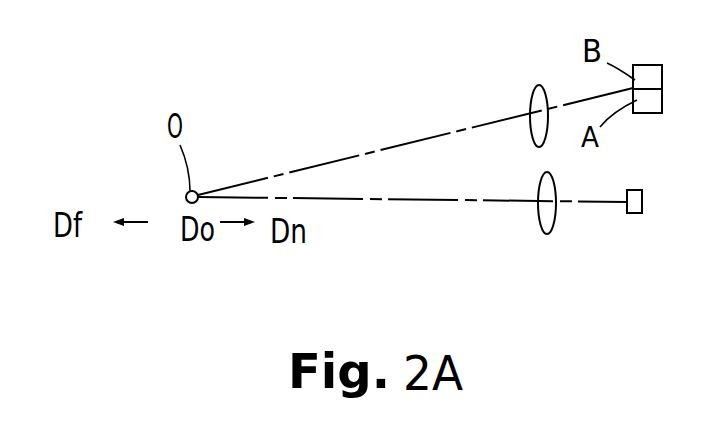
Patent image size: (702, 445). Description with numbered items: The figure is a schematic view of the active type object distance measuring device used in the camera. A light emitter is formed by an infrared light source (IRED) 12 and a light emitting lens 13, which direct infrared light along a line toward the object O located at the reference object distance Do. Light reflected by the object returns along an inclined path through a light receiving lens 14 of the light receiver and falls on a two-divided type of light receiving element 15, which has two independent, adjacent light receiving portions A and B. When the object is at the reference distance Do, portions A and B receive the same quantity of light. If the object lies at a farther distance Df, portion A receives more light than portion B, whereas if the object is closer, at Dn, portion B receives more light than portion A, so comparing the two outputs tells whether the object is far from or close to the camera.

The infrared light source (IRED) 12 is at (633, 215).
The light emitting lens 13 is at (550, 213).
The light receiving lens 14 is at (535, 101).
The two-divided type of light receiving element 15 is at (650, 72).